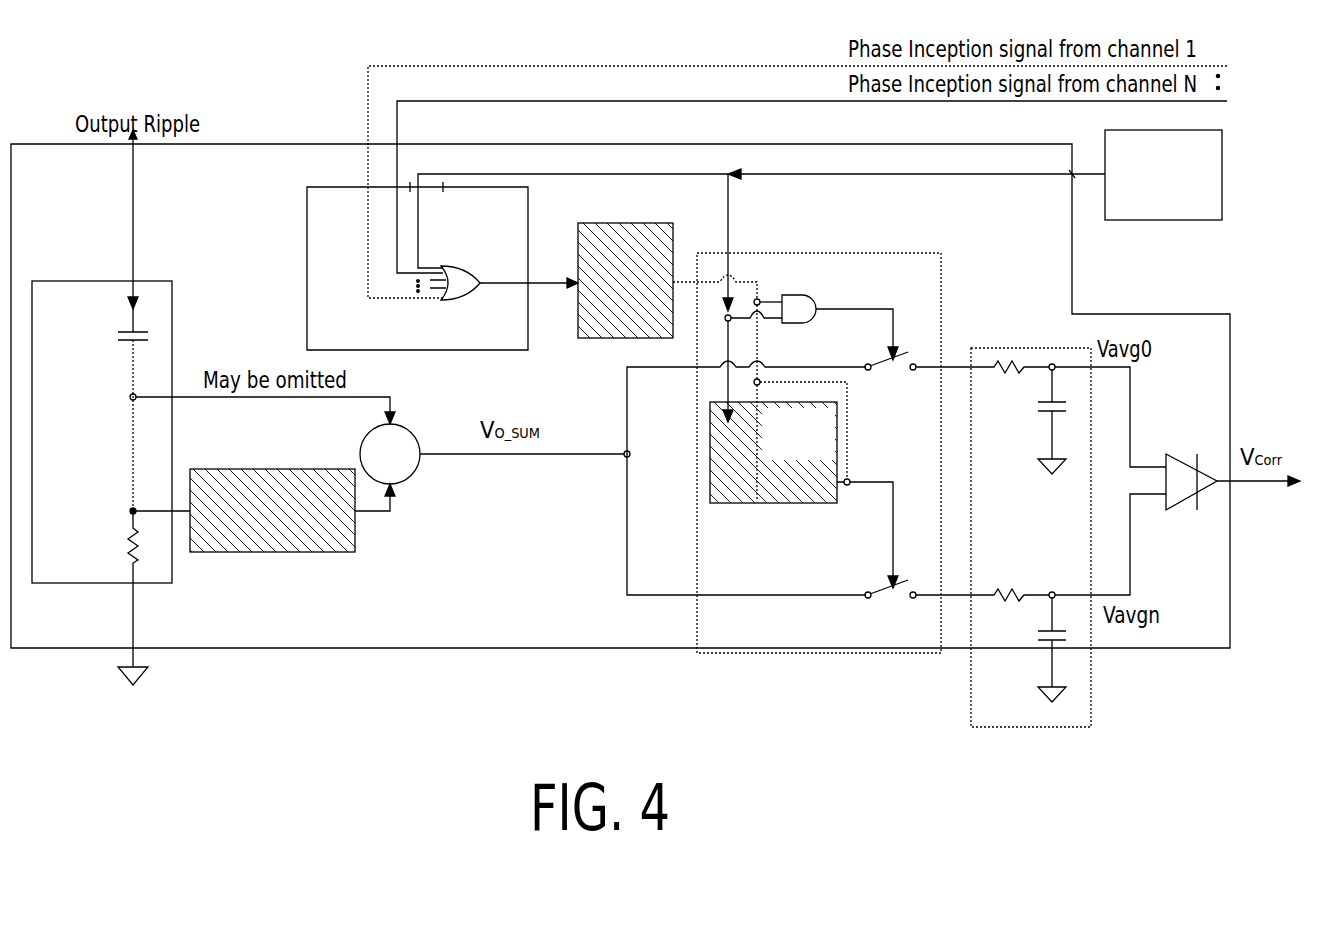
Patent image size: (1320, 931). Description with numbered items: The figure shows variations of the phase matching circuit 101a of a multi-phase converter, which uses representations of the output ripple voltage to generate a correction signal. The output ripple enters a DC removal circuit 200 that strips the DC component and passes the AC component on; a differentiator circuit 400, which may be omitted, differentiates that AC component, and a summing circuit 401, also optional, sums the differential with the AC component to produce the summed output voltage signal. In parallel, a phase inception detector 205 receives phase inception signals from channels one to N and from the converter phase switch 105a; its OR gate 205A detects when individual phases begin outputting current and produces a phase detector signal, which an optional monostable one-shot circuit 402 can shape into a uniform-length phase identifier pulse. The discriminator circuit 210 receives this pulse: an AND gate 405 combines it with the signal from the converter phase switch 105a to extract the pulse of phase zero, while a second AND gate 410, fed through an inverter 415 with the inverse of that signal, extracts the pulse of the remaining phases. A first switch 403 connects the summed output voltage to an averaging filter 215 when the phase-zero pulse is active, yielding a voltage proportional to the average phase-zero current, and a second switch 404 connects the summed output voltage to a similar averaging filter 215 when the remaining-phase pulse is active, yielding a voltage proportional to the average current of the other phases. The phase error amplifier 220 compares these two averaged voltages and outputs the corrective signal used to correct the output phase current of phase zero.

The phase matching circuit 101a is at (40, 126).
The converter phase switch 105a is at (1163, 189).
The DC removal circuit 200 is at (102, 466).
The phase inception detector 205 is at (298, 182).
The OR gate 205A is at (456, 298).
The discriminator circuit 210 is at (819, 427).
The averaging filter 215 is at (1031, 537).
The phase error amplifier 220 is at (1201, 488).
The differentiator circuit 400 is at (272, 529).
The summing circuit 401 is at (403, 437).
The monostable (one shot) circuit 402 is at (618, 298).
The first switch 403 is at (882, 364).
The second switch 404 is at (880, 594).
The AND gate 405 is at (828, 300).
The second AND gate 410 is at (768, 511).
The inverter 415 is at (703, 434).